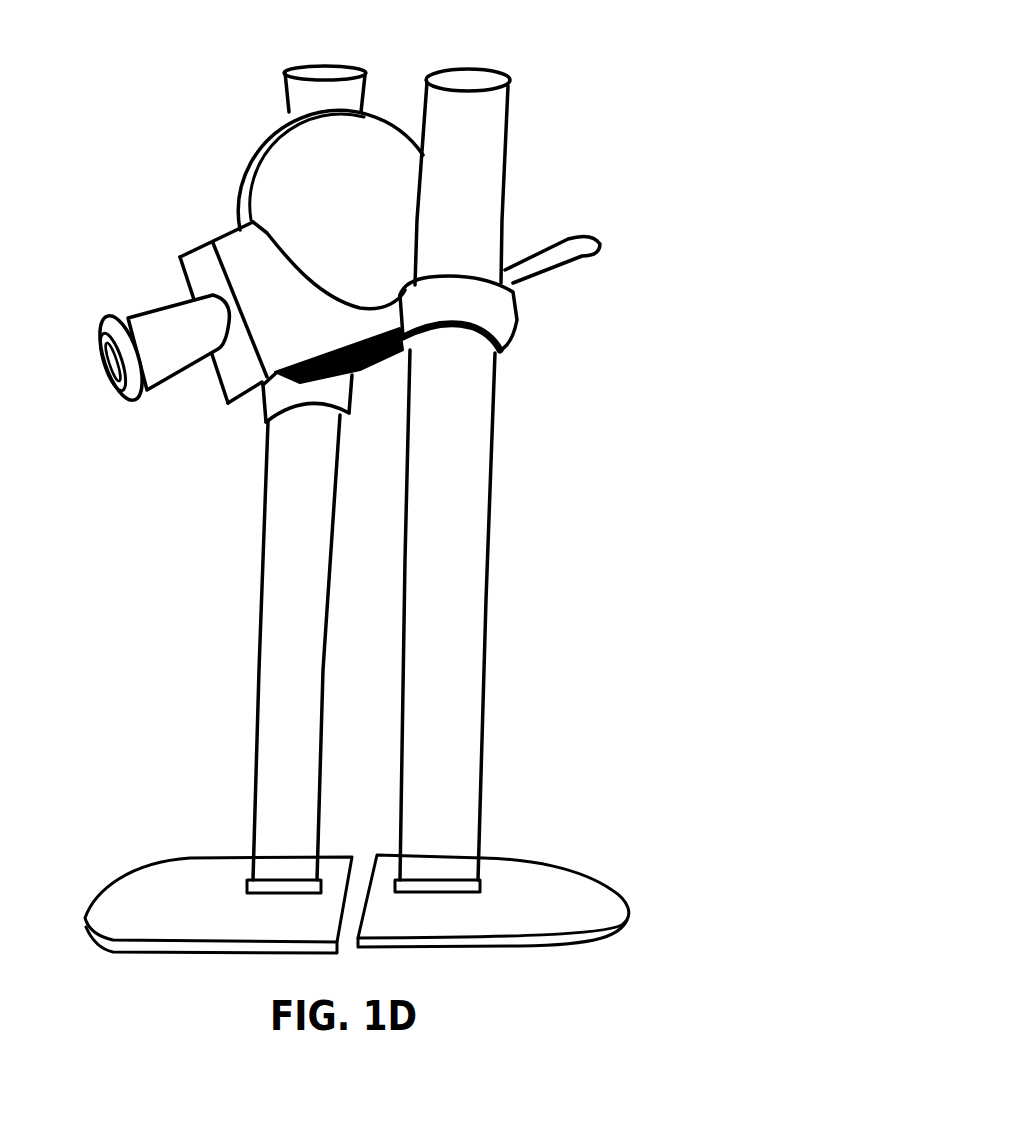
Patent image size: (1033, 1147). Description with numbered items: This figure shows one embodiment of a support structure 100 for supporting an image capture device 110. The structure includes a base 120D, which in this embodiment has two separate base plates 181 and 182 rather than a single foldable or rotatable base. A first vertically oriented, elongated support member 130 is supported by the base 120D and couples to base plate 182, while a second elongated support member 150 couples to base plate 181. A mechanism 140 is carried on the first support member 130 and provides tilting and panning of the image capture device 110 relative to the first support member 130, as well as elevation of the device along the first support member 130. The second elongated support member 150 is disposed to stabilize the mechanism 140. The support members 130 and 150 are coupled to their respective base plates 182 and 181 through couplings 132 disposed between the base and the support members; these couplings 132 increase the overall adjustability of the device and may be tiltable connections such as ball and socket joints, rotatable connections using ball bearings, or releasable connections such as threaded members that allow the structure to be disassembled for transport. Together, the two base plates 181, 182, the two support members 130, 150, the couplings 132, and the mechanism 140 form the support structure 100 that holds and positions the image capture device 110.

The support structure 100 is at (381, 507).
The image capture device 110 is at (207, 242).
The base 120D is at (381, 786).
The first elongated support member 130 is at (473, 496).
The couplings 132 is at (245, 880).
The mechanism 140 is at (378, 382).
The second elongated support member 150 is at (276, 602).
The base plate 181 is at (165, 897).
The base plate 182 is at (525, 908).